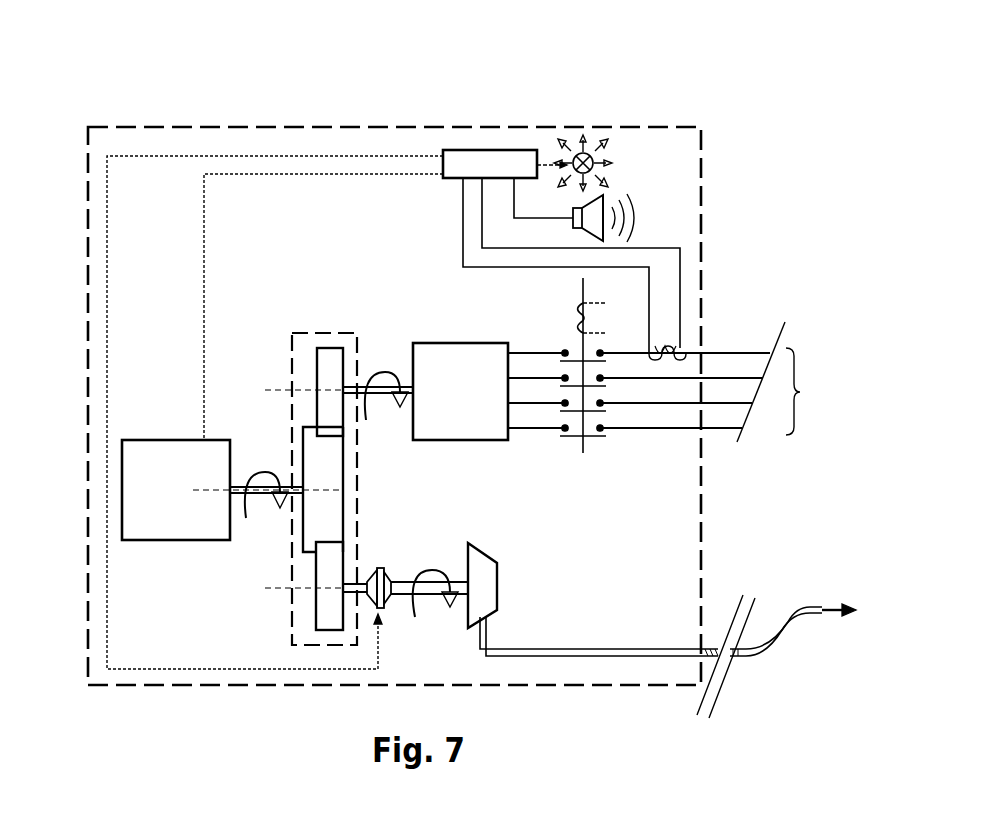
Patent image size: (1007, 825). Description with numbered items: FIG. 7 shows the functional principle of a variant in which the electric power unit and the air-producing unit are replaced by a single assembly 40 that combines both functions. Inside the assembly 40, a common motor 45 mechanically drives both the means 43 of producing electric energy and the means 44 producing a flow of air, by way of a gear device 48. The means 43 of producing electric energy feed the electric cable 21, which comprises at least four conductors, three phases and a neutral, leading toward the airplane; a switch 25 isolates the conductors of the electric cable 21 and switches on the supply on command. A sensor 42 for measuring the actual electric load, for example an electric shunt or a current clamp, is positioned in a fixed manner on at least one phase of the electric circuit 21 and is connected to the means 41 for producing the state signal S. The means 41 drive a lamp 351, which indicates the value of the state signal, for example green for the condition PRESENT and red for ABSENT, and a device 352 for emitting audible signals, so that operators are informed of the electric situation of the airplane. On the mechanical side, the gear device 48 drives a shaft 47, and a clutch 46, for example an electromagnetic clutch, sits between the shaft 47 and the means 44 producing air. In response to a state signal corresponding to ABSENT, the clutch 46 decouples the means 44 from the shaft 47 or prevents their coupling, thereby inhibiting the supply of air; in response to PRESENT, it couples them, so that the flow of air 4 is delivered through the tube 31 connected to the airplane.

The single assembly 40 is at (287, 118).
The means for producing the state signal 41 is at (484, 158).
The lamp 351 is at (588, 152).
The device for emitting audible signals 352 is at (573, 223).
The sensor for measuring the actual electric load 42 is at (680, 342).
The electric cable 21 is at (669, 382).
The switch 25 is at (578, 341).
The means of producing electric energy 43 is at (480, 435).
The motor 45 is at (160, 446).
The gear device 48 is at (356, 450).
The clutch 46 is at (381, 572).
The shaft 47 is at (404, 580).
The means producing a flow of air 44 is at (497, 592).
The tube 31 is at (708, 647).
The flow of air 4 is at (827, 607).